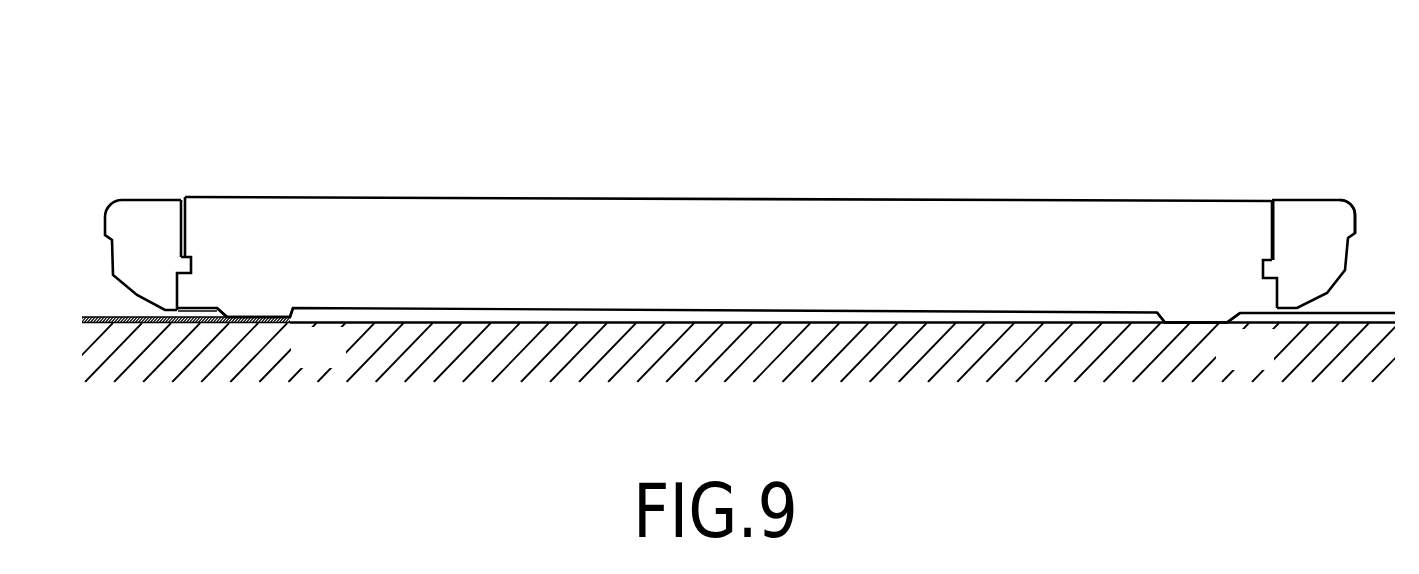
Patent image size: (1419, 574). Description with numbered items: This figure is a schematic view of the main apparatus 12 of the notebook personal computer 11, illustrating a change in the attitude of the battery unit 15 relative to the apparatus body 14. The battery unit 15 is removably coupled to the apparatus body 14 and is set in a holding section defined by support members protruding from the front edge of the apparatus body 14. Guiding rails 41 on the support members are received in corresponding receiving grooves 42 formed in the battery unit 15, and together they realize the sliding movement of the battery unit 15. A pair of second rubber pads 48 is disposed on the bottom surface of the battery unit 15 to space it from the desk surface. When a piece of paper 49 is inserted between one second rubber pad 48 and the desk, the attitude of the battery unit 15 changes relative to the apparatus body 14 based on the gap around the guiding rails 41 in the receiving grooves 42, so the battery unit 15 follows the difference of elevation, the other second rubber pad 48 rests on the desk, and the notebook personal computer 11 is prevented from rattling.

The notebook personal computer 11 is at (762, 201).
The main apparatus 12 is at (1346, 178).
The apparatus body 14 is at (1366, 196).
The battery unit 15 is at (955, 178).
The guiding rail 41 is at (749, 259).
The receiving groove 42 is at (163, 253).
The second rubber pad 48 is at (293, 313).
The piece of paper 49 is at (112, 318).